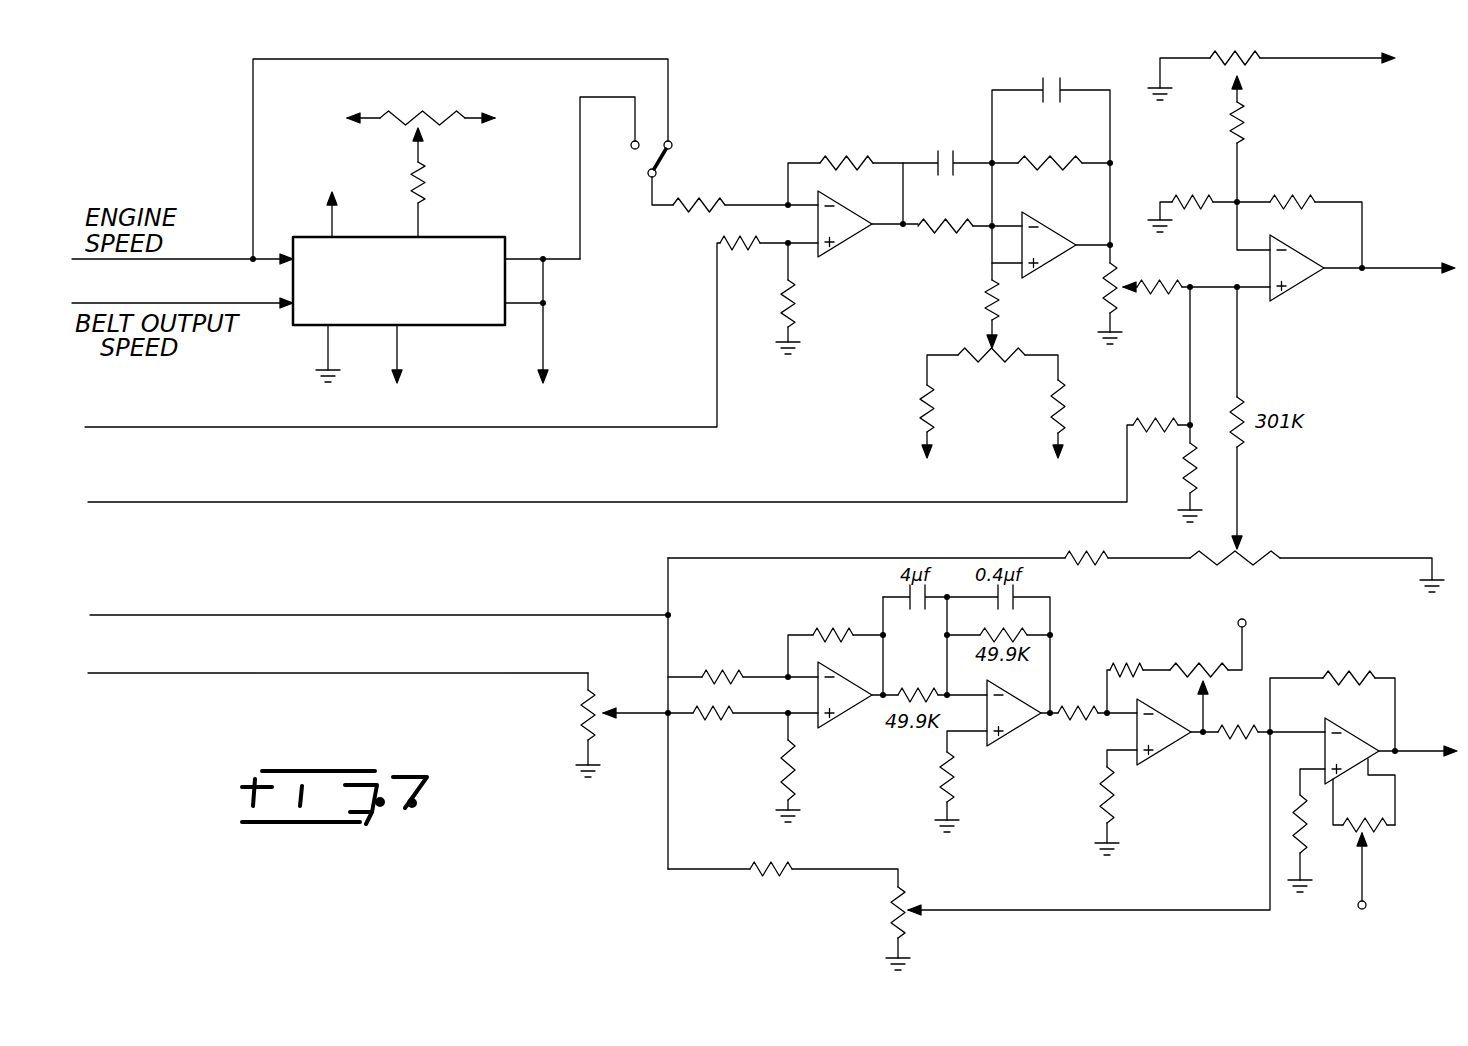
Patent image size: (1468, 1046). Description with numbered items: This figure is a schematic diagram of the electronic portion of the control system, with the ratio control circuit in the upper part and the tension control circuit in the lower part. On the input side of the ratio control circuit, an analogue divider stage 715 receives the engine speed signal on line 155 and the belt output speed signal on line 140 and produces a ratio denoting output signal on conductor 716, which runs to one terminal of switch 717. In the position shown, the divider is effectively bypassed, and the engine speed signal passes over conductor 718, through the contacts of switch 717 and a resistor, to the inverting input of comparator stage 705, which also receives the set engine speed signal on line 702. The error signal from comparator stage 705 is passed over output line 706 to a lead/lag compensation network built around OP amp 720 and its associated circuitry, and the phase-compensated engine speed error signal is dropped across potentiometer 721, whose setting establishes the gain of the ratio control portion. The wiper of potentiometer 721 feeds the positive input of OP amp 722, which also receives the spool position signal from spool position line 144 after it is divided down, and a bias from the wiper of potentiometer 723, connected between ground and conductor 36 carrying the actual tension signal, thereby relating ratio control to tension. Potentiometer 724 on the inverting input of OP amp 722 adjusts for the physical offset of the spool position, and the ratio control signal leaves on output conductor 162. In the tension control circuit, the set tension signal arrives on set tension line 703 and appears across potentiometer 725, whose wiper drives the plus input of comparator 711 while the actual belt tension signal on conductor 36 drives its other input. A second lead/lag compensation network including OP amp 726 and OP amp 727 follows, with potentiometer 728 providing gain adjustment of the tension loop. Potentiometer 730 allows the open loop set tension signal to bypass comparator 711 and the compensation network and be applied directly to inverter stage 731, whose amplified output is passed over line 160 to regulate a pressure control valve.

The conductor 36 is at (555, 611).
The belt output speed signal line 140 is at (166, 299).
The spool position line 144 is at (553, 501).
The engine speed signal line 155 is at (262, 273).
The output line 160 is at (1418, 749).
The output conductor 162 is at (1402, 275).
The set engine speed line 702 is at (468, 430).
The set tension line 703 is at (450, 671).
The comparator stage 705 is at (858, 252).
The output line 706 is at (896, 232).
The comparator 711 is at (856, 706).
The analogue divider stage 715 is at (460, 327).
The conductor 716 is at (581, 223).
The switch 717 is at (632, 185).
The conductor 718 is at (253, 97).
The OP amp 720 is at (1042, 229).
The potentiometer 721 is at (1116, 314).
The OP amp 722 is at (1290, 289).
The potentiometer 723 is at (1255, 568).
The potentiometer 724 is at (1262, 66).
The potentiometer 725 is at (580, 740).
The OP amp 726 is at (1004, 736).
The OP amp 727 is at (1165, 748).
The potentiometer 728 is at (1232, 682).
The potentiometer 730 is at (910, 898).
The inverter stage 731 is at (1352, 739).